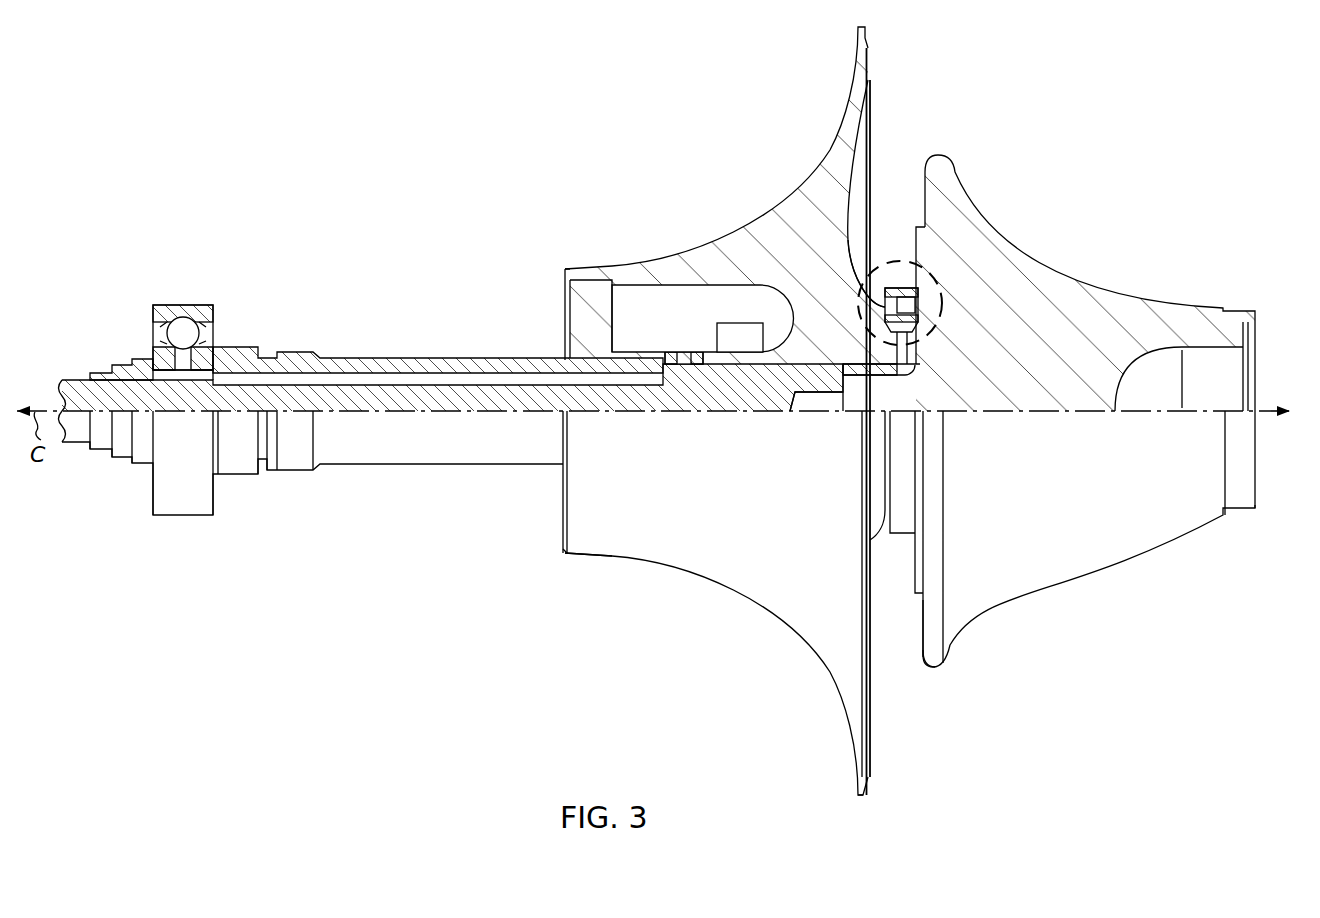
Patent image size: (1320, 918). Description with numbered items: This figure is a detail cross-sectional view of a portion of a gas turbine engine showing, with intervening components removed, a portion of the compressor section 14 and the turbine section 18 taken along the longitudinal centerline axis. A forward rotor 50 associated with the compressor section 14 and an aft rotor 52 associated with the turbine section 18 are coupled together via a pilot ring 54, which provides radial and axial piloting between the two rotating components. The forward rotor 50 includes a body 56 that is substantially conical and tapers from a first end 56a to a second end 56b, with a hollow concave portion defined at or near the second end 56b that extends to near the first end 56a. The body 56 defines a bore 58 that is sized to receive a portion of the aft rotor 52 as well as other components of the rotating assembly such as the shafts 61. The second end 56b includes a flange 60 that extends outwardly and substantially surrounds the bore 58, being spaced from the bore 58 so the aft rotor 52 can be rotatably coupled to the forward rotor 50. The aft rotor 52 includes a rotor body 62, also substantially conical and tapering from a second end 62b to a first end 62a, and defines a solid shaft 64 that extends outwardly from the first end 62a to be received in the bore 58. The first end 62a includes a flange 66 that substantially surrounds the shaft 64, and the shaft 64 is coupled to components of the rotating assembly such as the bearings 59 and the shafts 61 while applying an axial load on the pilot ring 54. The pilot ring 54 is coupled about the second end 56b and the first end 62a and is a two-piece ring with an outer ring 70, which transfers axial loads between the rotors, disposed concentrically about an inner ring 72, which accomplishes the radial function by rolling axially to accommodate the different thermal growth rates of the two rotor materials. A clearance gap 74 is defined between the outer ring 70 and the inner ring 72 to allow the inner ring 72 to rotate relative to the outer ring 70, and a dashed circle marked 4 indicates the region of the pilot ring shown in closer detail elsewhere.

The compressor section 14 is at (672, 145).
The turbine section 18 is at (1159, 140).
The forward rotor 50 is at (768, 187).
The aft rotor 52 is at (1032, 224).
The pilot ring 54 is at (897, 150).
The body 56 is at (631, 244).
The first end 56a is at (557, 548).
The second end 56b is at (858, 793).
The bore 58 is at (750, 366).
The bearings 59 is at (181, 305).
The flange 60 is at (883, 330).
The shafts 61 is at (372, 385).
The rotor body 62 is at (1217, 285).
The first end 62a is at (926, 648).
The second end 62b is at (1256, 500).
The shaft 64 is at (840, 412).
The flange 66 is at (920, 334).
The outer ring 70 is at (900, 272).
The inner ring 72 is at (927, 323).
The clearance gap 74 is at (890, 308).
The detail region of FIG. 4 is at (942, 288).